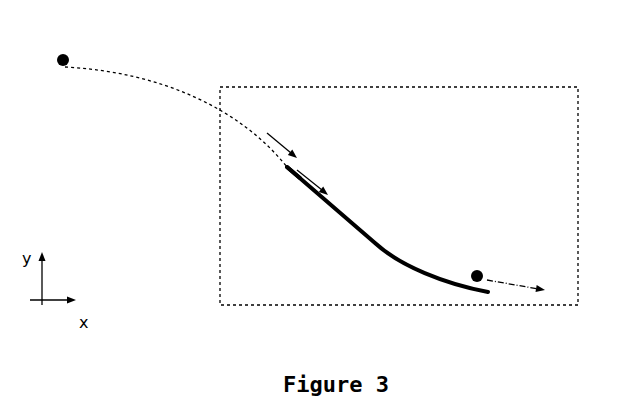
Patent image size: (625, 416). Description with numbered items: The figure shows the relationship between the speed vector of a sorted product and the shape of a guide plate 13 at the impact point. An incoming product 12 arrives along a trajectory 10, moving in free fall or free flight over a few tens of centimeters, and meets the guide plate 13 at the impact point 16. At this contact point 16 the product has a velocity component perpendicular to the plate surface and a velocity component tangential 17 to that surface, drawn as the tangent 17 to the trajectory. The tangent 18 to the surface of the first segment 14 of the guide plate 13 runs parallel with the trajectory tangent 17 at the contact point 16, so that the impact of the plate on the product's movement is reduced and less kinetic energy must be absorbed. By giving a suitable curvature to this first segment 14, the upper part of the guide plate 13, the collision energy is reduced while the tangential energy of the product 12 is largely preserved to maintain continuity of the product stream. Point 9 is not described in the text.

The starting point 9 is at (70, 53).
The trajectory 10 is at (157, 83).
The incoming product 12 is at (482, 268).
The guide plate 13 is at (498, 308).
The first segment 14 is at (390, 247).
The impact point 16 is at (287, 170).
The tangent to the trajectory 17 is at (282, 143).
The tangent to the surface 18 is at (310, 182).